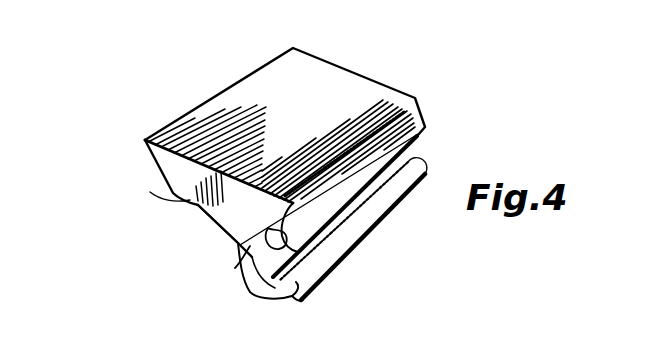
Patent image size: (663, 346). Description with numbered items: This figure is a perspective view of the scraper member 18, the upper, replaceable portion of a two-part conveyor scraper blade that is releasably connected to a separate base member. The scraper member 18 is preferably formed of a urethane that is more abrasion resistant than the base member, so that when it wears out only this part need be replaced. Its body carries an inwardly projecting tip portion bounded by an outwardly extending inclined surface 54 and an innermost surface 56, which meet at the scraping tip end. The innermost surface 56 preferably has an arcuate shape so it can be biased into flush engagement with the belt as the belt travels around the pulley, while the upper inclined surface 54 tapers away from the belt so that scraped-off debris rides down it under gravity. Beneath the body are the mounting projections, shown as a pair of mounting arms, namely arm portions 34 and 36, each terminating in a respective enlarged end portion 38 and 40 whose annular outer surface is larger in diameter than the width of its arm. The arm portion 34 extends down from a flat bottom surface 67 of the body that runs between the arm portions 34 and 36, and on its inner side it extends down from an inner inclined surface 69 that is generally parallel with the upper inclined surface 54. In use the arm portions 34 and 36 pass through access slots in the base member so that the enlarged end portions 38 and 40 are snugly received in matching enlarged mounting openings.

The scraper member 18 is at (450, 89).
The outwardly extending inclined surface 54 is at (325, 99).
The innermost surface 56 is at (158, 165).
The arm portion 36 is at (343, 236).
The enlarged end portion 40 is at (322, 268).
The inner inclined surface 69 is at (194, 214).
The flat bottom surface 67 is at (235, 268).
The arm portion 34 is at (243, 283).
The enlarged end portion 38 is at (300, 303).